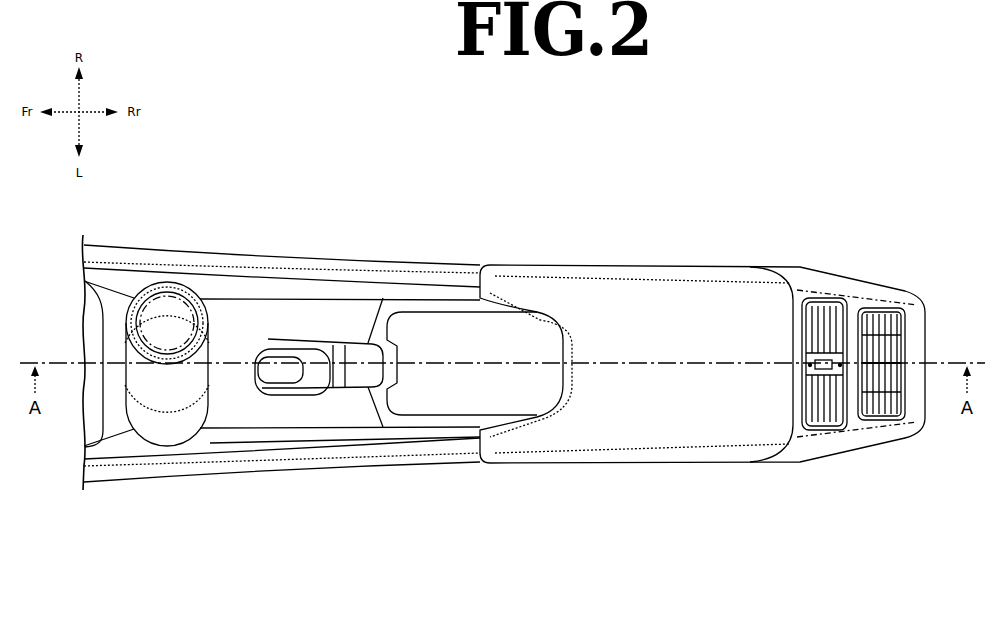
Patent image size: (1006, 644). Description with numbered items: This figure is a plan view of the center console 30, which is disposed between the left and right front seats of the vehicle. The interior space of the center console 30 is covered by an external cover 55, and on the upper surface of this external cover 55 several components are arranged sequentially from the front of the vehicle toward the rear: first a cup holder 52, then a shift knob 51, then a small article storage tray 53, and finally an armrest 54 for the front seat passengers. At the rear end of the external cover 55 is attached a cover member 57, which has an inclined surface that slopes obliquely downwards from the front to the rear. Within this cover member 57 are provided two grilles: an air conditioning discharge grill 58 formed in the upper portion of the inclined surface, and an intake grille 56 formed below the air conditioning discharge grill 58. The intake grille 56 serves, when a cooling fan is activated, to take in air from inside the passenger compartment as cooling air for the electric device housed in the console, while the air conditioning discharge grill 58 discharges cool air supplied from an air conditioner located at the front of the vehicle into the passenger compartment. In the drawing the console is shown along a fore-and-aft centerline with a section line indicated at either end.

The center console 30 is at (738, 200).
The shift knob 51 is at (310, 353).
The cup holder 52 is at (170, 313).
The small article storage tray 53 is at (445, 335).
The armrest 54 is at (647, 312).
The external cover 55 is at (380, 463).
The intake grille 56 is at (893, 313).
The cover member 57 is at (843, 447).
The air conditioning discharge grill 58 is at (832, 302).